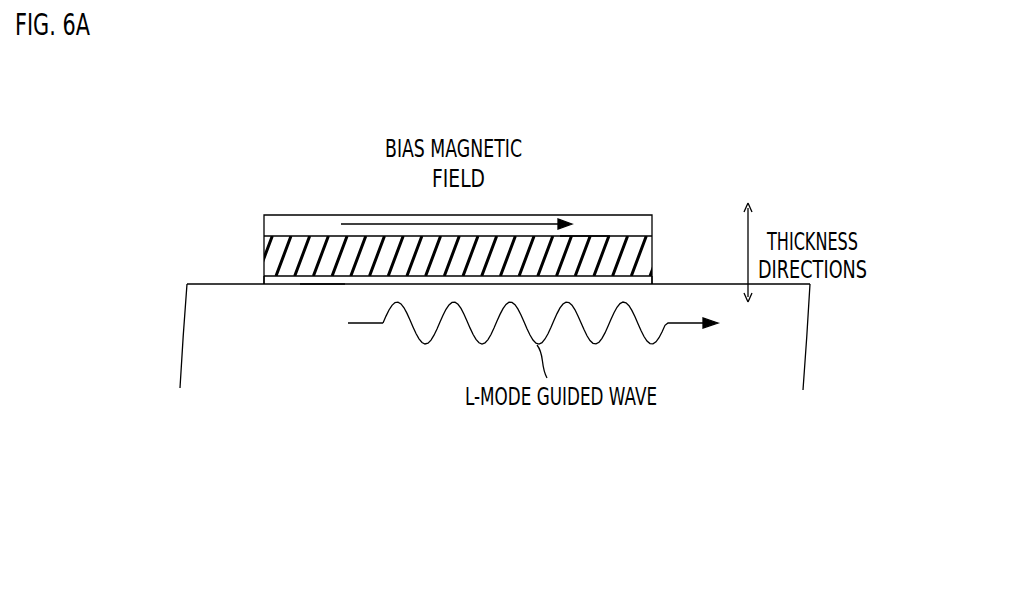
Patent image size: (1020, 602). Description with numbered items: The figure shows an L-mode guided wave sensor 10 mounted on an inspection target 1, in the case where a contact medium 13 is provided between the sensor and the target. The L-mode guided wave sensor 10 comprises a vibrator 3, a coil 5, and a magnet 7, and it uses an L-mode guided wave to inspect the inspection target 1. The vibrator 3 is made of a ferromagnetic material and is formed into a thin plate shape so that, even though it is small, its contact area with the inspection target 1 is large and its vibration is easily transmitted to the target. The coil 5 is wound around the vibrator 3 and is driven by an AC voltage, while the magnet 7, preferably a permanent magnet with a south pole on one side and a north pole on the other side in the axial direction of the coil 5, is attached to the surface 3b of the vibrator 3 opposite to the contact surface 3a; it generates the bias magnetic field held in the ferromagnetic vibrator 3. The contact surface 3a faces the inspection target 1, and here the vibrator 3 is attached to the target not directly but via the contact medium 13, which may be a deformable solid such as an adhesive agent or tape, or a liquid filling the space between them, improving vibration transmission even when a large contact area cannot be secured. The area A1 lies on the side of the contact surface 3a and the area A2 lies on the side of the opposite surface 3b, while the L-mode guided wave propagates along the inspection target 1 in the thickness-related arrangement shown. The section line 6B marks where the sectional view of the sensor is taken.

The inspection target 1 is at (688, 279).
The vibrator 3 is at (267, 254).
The contact surface of the vibrator 3a is at (322, 286).
The surface opposite to the contact surface 3b is at (587, 235).
The coil 5 is at (393, 255).
The magnet 7 is at (298, 223).
The L-mode guided wave sensor 10 is at (260, 188).
The contact medium 13 is at (263, 280).
The area on a side of the first side surface A1 is at (304, 285).
The area on a side of the second side surface A2 is at (331, 235).
The section line 6B- 6B is at (372, 165).